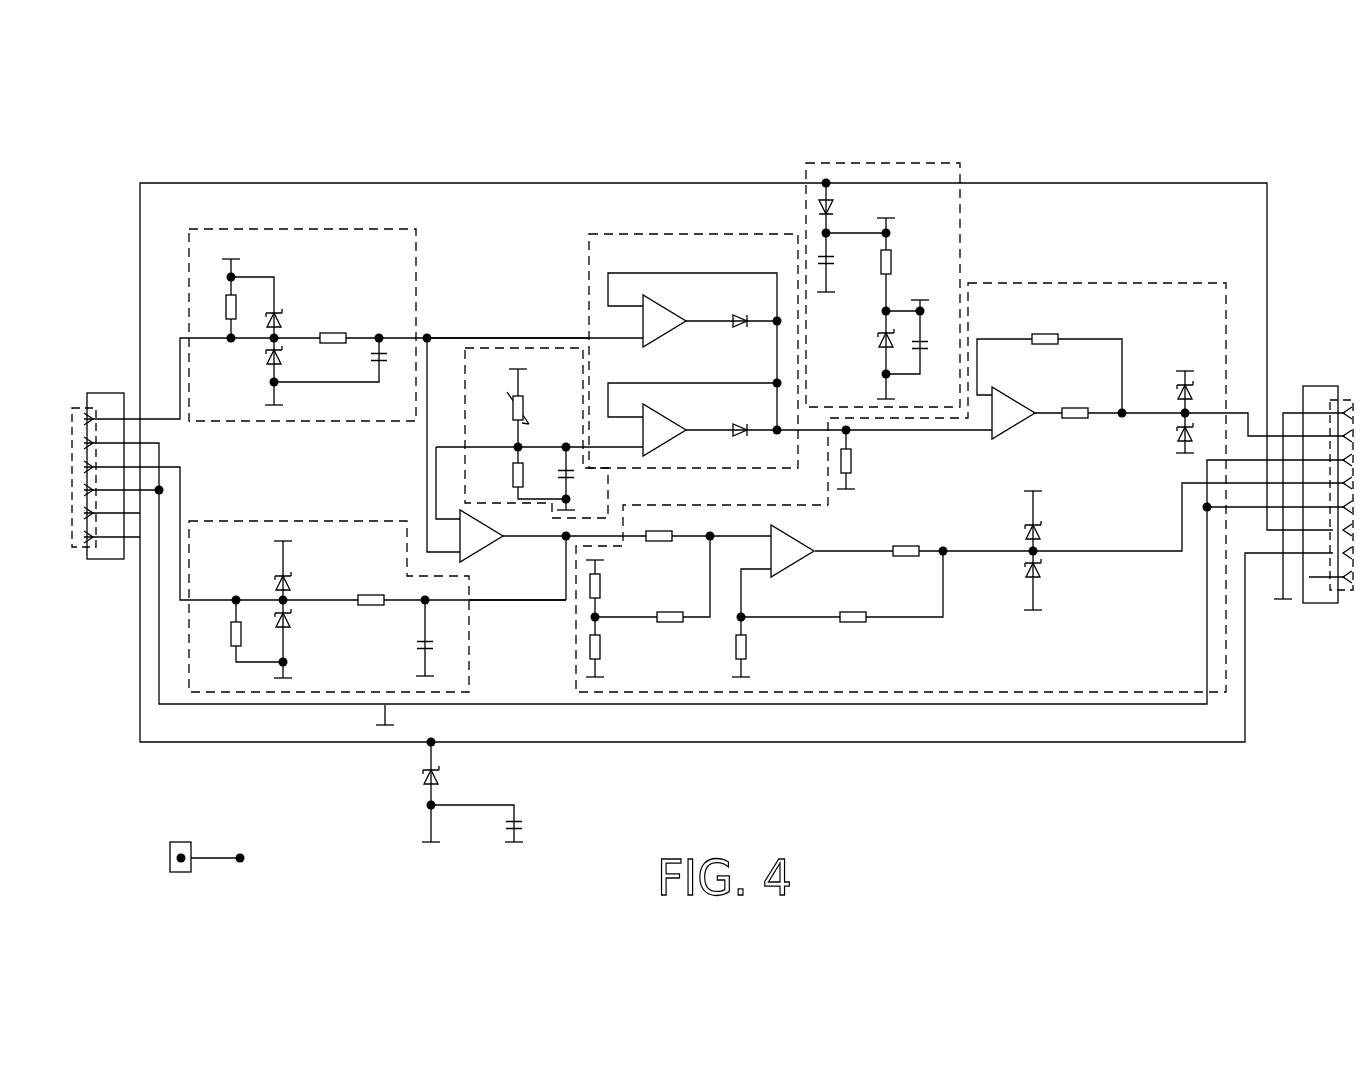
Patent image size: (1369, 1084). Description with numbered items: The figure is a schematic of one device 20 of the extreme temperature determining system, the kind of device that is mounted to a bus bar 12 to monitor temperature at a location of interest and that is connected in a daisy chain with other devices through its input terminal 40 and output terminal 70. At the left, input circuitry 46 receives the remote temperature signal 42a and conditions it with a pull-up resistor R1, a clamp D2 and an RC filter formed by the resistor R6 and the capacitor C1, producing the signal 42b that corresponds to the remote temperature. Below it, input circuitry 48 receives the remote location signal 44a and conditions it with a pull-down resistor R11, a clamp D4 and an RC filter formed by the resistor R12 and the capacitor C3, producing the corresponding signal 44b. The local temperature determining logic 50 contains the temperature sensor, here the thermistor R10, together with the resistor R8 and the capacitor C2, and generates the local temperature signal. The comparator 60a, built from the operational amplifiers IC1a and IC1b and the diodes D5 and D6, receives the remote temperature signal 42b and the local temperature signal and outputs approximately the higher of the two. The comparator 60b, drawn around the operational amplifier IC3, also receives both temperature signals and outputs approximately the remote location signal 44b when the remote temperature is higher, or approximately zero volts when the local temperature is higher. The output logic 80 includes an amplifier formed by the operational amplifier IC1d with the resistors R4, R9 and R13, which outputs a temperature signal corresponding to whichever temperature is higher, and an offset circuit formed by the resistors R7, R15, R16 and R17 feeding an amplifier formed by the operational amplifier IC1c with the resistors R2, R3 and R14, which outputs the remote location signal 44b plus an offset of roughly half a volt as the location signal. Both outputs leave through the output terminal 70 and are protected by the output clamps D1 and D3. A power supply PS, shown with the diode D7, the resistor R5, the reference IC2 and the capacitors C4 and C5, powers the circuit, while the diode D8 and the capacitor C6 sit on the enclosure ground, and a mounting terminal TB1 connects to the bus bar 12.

The device 20 is at (780, 161).
The input terminal 40 is at (109, 552).
The remote temperature signal 42a is at (180, 362).
The remote temperature signal 42b is at (485, 337).
The remote location signal 44a is at (180, 596).
The remote location signal 44b is at (523, 602).
The input circuitry 46 is at (393, 268).
The input circuitry 48 is at (368, 551).
The local temperature determining logic 50 is at (570, 383).
The comparator 60a is at (773, 265).
The comparator 60b is at (515, 542).
The output terminal 70 is at (1325, 603).
The output logic 80 is at (1185, 321).
The bus bar 12 is at (222, 858).
The power supply PS is at (947, 218).
The mounting terminal TB1 is at (170, 858).
The pull-up resistor R1 is at (235, 301).
The resistor R2 is at (752, 645).
The resistor R3 is at (853, 607).
The resistor R4 is at (859, 458).
The resistor R5 is at (900, 274).
The resistor R6 is at (332, 326).
The resistor R7 is at (607, 647).
The resistor R8 is at (525, 473).
The resistor R9 is at (1045, 328).
The thermistor R10 is at (500, 410).
The pull-down resistor R11 is at (237, 629).
The resistor R12 is at (371, 590).
The resistor R13 is at (1092, 402).
The resistor R14 is at (917, 540).
The resistor R15 is at (677, 525).
The resistor R16 is at (639, 607).
The resistor R17 is at (613, 588).
The capacitor C1 is at (342, 359).
The capacitor C2 is at (578, 477).
The capacitor C3 is at (437, 636).
The capacitor C4 is at (919, 342).
The capacitor C5 is at (838, 262).
The capacitor C6 is at (489, 823).
The output clamp D1 is at (1170, 412).
The clamp D2 is at (289, 357).
The output clamp D3 is at (1048, 550).
The clamp D4 is at (297, 609).
The diode D5 is at (755, 309).
The diode D6 is at (755, 419).
The diode D7 is at (840, 208).
The zener diode D8 is at (445, 790).
The operational amplifier IC1a is at (692, 315).
The operational amplifier IC1b is at (695, 423).
The operational amplifier IC1c is at (788, 571).
The operational amplifier IC1d is at (1026, 418).
The voltage reference IC2 is at (868, 355).
The operational amplifier IC3 is at (505, 521).